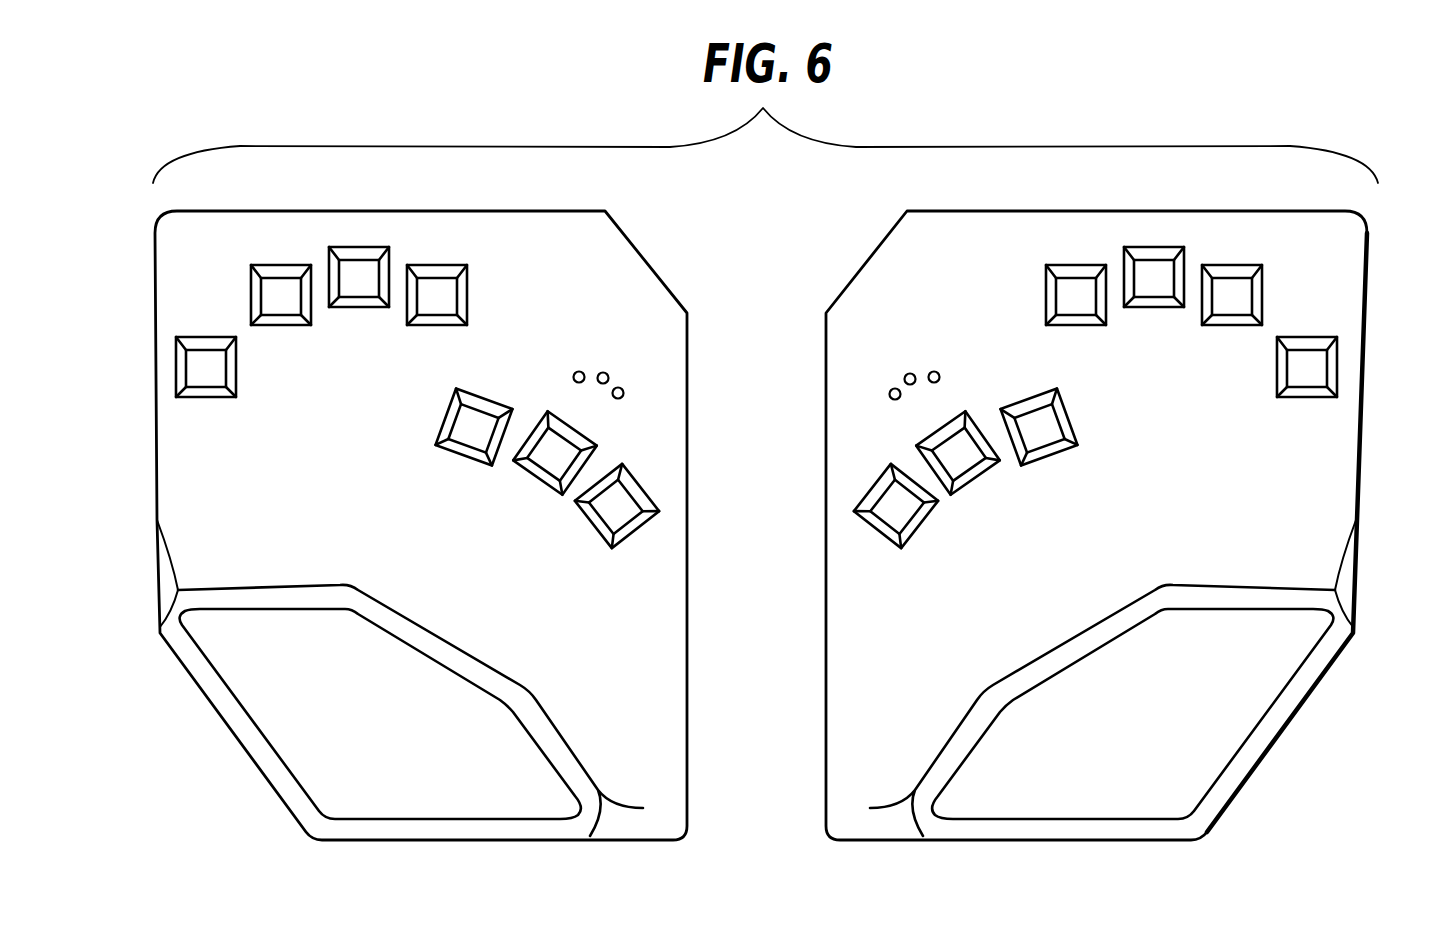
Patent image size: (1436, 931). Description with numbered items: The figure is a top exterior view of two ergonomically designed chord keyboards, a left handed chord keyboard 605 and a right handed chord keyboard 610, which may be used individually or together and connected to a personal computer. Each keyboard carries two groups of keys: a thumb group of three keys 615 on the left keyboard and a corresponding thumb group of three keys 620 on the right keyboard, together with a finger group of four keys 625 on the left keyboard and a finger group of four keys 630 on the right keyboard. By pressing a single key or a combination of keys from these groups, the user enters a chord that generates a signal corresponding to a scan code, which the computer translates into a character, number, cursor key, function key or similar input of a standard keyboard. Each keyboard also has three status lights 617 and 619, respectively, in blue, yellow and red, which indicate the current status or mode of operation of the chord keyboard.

The left handed chord keyboard 605 is at (152, 382).
The right handed chord keyboard 610 is at (1364, 383).
The thumb group of three keys 615 is at (605, 552).
The status lights 617 is at (640, 392).
The status lights 619 is at (905, 353).
The thumb group of three keys 620 is at (968, 483).
The finger group of four keys 625 is at (462, 335).
The finger group of four keys 630 is at (1191, 351).